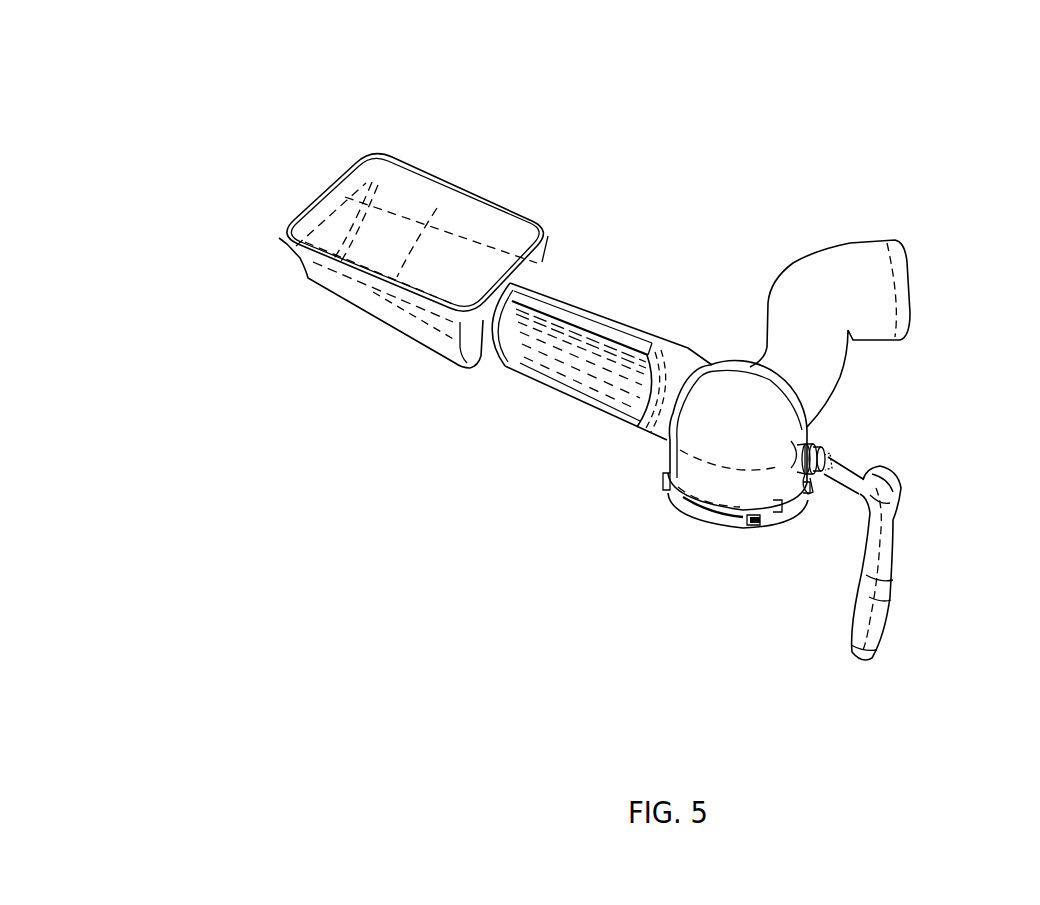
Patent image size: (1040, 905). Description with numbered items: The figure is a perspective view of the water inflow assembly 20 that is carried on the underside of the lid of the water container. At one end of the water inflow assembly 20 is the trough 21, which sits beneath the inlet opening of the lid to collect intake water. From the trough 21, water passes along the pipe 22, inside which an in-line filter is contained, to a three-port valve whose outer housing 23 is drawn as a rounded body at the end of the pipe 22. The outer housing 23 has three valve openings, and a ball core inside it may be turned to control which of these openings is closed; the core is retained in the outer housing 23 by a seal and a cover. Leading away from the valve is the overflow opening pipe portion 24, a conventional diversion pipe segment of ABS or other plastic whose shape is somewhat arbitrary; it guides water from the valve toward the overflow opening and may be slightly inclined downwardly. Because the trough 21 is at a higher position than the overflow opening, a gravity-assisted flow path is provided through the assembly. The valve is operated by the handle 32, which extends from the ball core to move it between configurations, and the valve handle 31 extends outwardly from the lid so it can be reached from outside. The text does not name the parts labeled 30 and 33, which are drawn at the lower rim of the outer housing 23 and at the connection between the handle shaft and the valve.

The water inflow assembly 20 is at (300, 162).
The trough 21 is at (492, 197).
The pipe 22 is at (619, 318).
The outer housing 23 is at (672, 465).
The overflow opening pipe portion 24 is at (893, 243).
The rim band 30 is at (718, 530).
The valve handle 31 is at (887, 473).
The handle 32 is at (840, 488).
The knob 33 is at (822, 450).